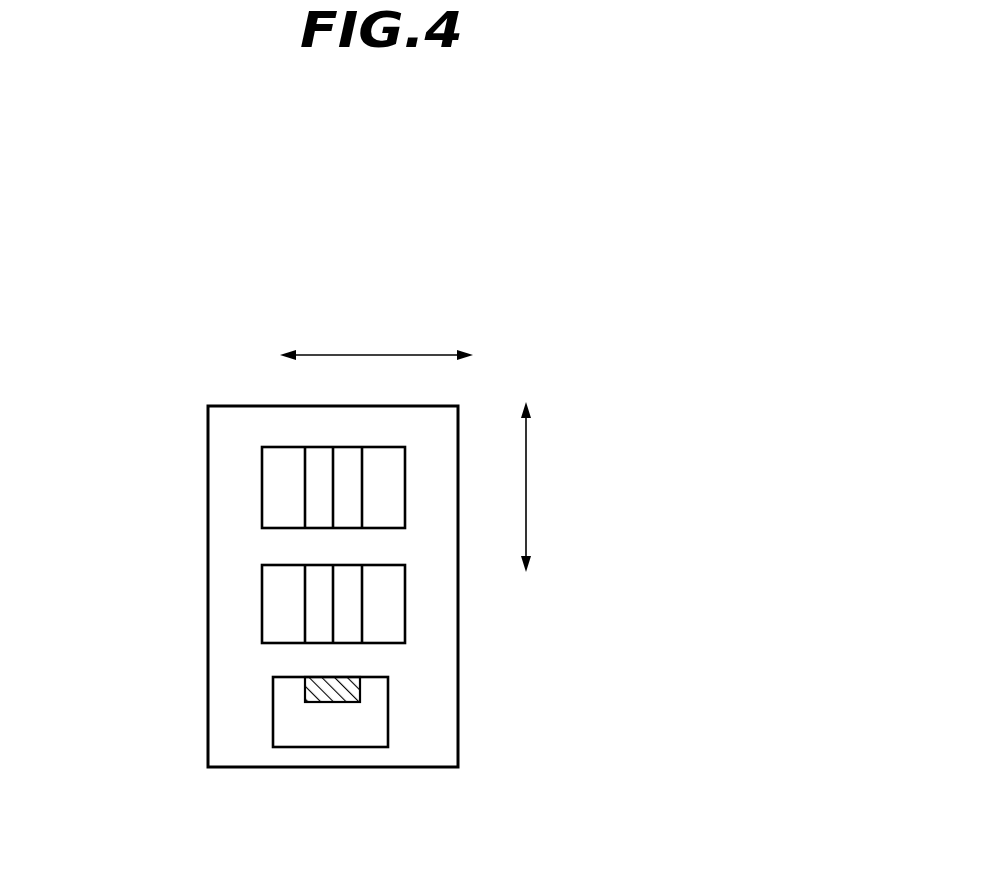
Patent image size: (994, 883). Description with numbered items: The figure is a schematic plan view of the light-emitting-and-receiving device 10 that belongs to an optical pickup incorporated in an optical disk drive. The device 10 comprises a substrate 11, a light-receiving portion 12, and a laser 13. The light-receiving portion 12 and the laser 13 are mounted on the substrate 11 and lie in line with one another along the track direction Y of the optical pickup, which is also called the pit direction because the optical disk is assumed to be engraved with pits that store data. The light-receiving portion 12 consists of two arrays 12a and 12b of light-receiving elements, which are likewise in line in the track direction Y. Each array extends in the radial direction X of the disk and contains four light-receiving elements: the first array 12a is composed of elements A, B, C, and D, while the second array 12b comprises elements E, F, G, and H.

The light-emitting-and-receiving device 10 is at (552, 312).
The substrate 11 is at (432, 427).
The light-receiving portion 12 is at (110, 475).
The first array 12a is at (252, 601).
The second array 12b is at (252, 494).
The laser 13 is at (370, 676).